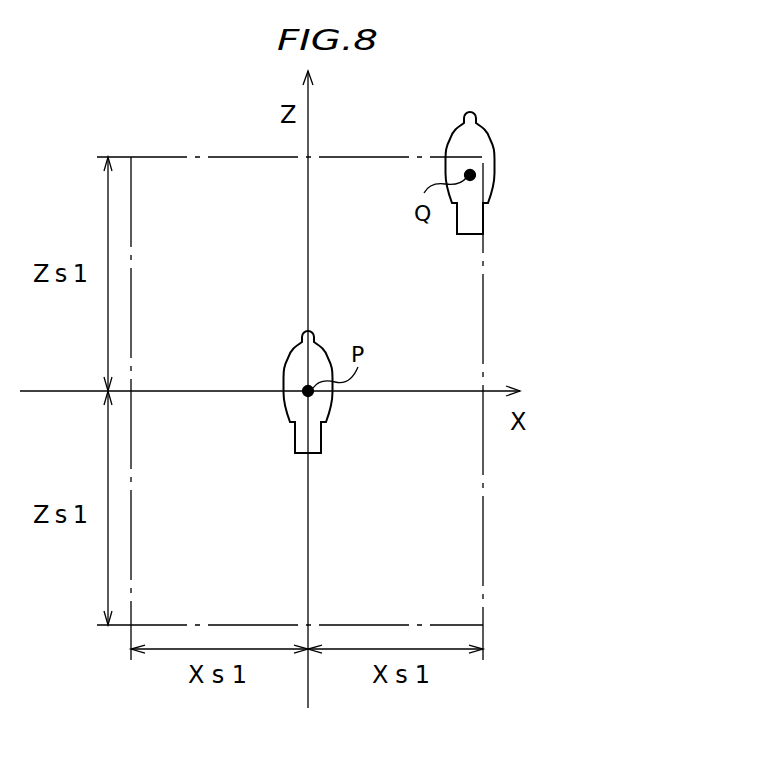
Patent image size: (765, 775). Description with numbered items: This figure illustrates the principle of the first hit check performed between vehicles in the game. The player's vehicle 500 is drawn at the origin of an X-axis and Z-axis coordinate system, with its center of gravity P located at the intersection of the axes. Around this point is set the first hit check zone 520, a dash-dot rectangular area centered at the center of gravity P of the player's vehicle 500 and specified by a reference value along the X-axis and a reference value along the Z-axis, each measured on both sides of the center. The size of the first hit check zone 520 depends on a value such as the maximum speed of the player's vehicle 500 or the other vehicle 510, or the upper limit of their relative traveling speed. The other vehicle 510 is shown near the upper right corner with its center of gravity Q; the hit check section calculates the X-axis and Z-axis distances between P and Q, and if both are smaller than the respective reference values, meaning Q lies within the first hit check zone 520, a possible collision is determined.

The player's vehicle 500 is at (321, 443).
The other vehicle 510 is at (490, 141).
The first hit check zone 520 is at (483, 472).